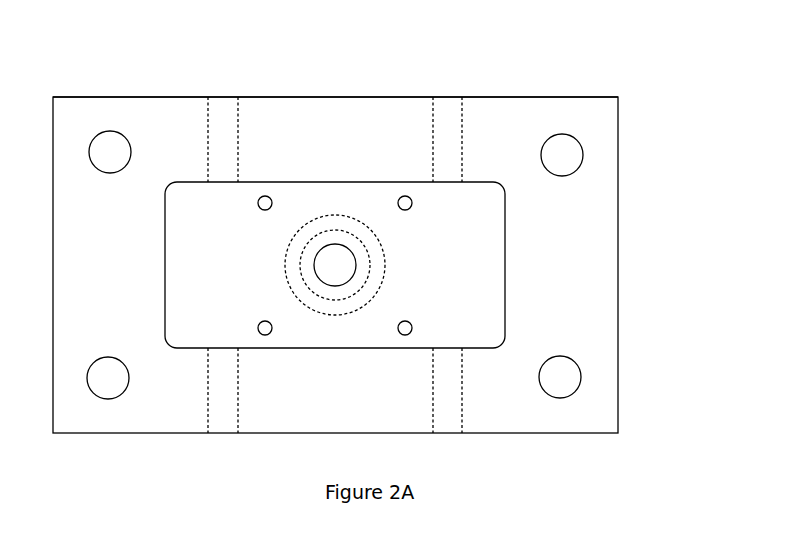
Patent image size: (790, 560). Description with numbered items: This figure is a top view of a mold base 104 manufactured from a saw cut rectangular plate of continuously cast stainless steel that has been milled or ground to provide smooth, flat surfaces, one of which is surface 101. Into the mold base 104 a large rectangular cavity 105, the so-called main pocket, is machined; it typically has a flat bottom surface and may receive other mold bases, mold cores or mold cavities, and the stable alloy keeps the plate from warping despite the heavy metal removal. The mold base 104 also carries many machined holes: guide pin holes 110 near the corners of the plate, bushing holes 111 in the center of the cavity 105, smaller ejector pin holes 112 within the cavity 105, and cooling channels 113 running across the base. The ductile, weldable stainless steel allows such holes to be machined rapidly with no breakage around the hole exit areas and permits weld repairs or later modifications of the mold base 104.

The surface 101 is at (151, 135).
The mold base 104 is at (118, 301).
The rectangular cavity 105 is at (308, 203).
The guide pin holes 110 is at (578, 137).
The bushing holes 111 is at (356, 265).
The ejector pin holes 112 is at (262, 196).
The cooling channels 113 is at (210, 122).